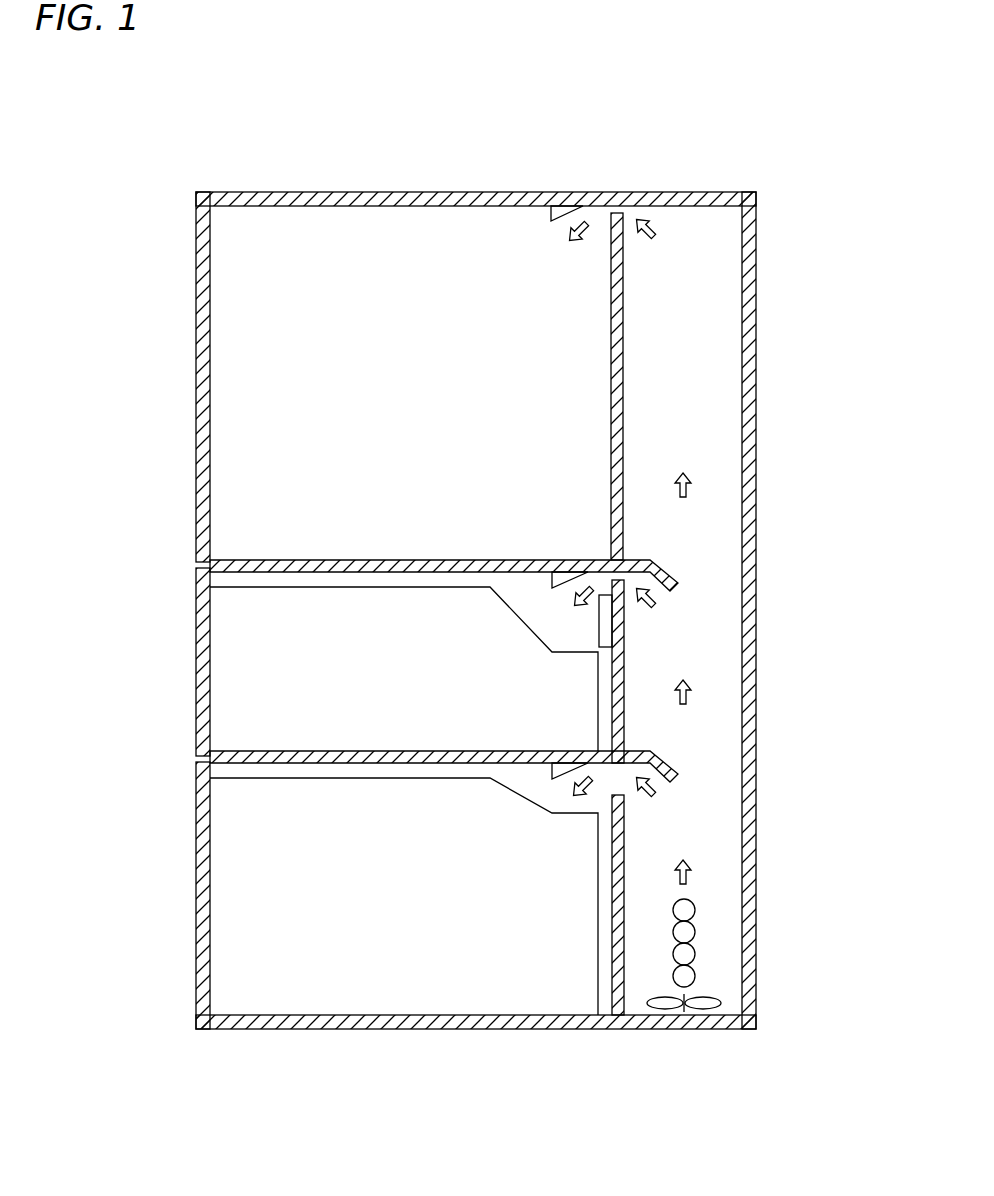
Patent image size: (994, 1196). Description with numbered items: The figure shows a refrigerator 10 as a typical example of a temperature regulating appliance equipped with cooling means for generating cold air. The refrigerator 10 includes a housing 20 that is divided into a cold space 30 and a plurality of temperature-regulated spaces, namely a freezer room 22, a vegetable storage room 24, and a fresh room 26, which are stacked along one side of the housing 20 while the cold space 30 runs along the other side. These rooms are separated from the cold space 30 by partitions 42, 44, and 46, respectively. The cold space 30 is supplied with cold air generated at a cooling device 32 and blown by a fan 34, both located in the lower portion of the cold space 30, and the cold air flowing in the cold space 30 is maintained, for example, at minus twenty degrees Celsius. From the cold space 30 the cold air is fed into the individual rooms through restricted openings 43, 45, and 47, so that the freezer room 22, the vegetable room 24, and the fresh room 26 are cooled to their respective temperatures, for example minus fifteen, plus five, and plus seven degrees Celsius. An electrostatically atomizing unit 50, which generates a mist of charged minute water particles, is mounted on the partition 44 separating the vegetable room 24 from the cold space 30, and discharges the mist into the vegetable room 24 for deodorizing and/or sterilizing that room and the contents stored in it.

The refrigerator 10 is at (763, 182).
The housing 20 is at (413, 192).
The freezer room 22 is at (237, 912).
The vegetable storage room 24 is at (233, 643).
The fresh room 26 is at (237, 356).
The cold space 30 is at (722, 690).
The cooling device 32 is at (690, 925).
The fan 34 is at (718, 1003).
The partition 42 is at (627, 862).
The restricted opening 43 is at (620, 777).
The partition 44 is at (627, 652).
The restricted opening 45 is at (645, 560).
The partition 46 is at (626, 338).
The restricted opening 47 is at (617, 212).
The electrostatically atomizing unit 50 is at (598, 622).